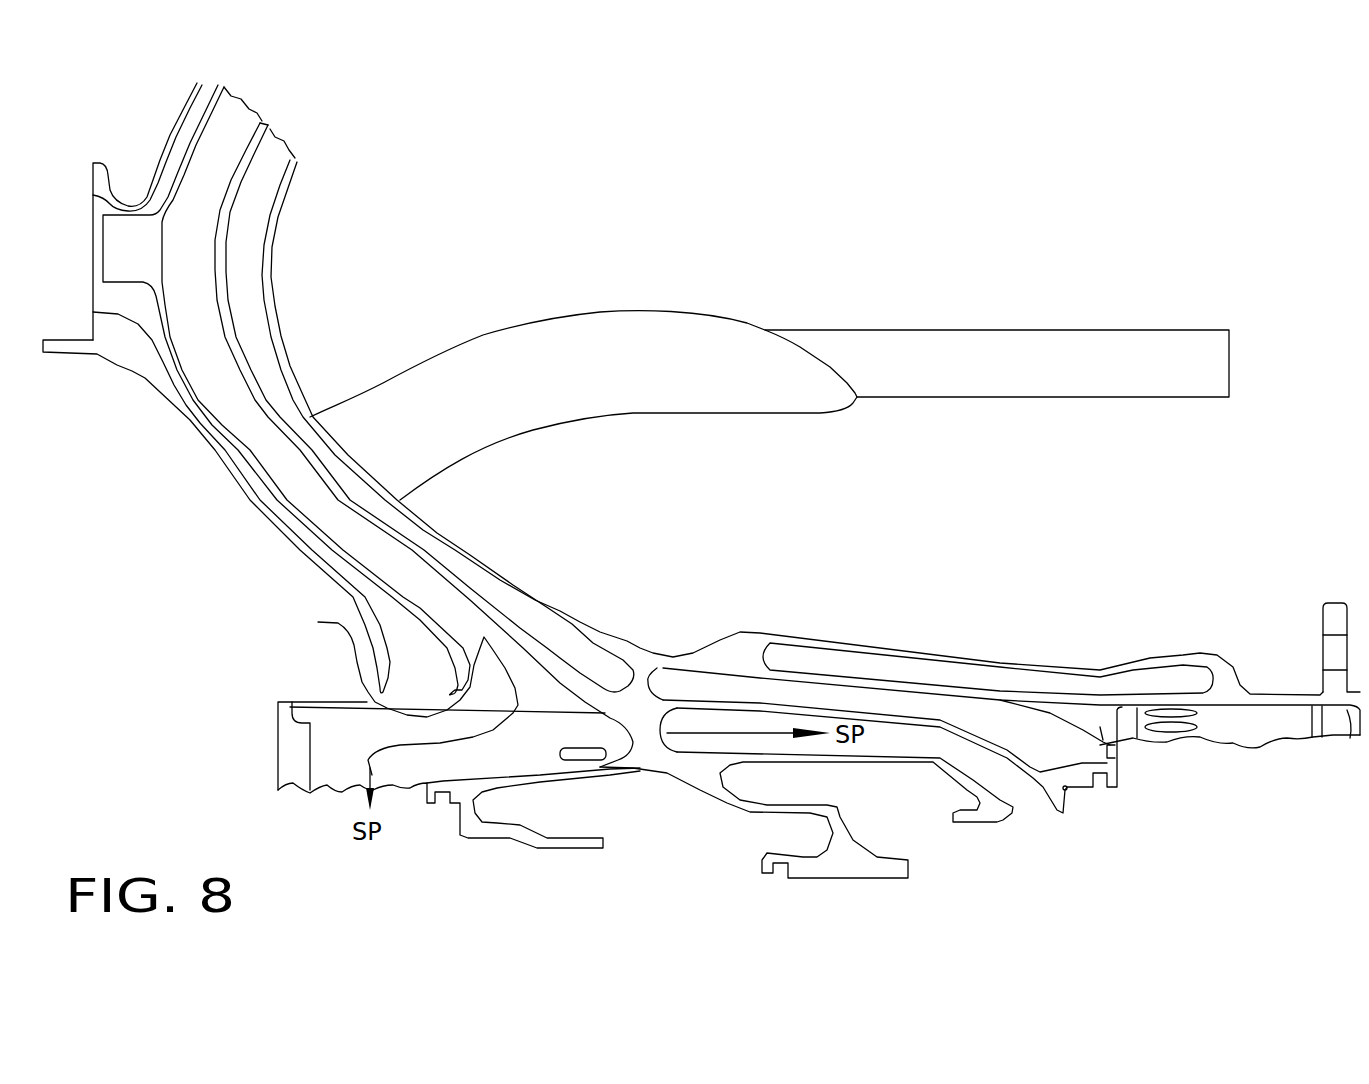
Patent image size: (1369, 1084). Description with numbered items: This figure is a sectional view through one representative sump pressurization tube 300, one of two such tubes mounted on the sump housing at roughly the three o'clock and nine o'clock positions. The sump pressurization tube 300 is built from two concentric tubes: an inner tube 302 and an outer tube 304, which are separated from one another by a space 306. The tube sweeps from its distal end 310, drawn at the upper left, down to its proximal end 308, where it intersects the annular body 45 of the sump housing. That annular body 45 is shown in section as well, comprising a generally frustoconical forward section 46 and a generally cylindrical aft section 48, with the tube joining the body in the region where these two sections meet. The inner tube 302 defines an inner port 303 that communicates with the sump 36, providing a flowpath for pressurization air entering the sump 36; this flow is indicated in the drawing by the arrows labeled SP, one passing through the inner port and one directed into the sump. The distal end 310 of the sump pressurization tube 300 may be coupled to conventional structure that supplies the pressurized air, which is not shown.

The sump pressurization tube 300 is at (156, 530).
The inner tube 302 is at (232, 182).
The inner port 303 is at (388, 692).
The outer tube 304 is at (266, 244).
The space 306 is at (282, 283).
The proximal end 308 is at (628, 650).
The distal end 310 is at (265, 122).
The annular body 45 is at (287, 702).
The forward section 46 is at (270, 560).
The aft section 48 is at (985, 624).
The sump 36 is at (926, 811).